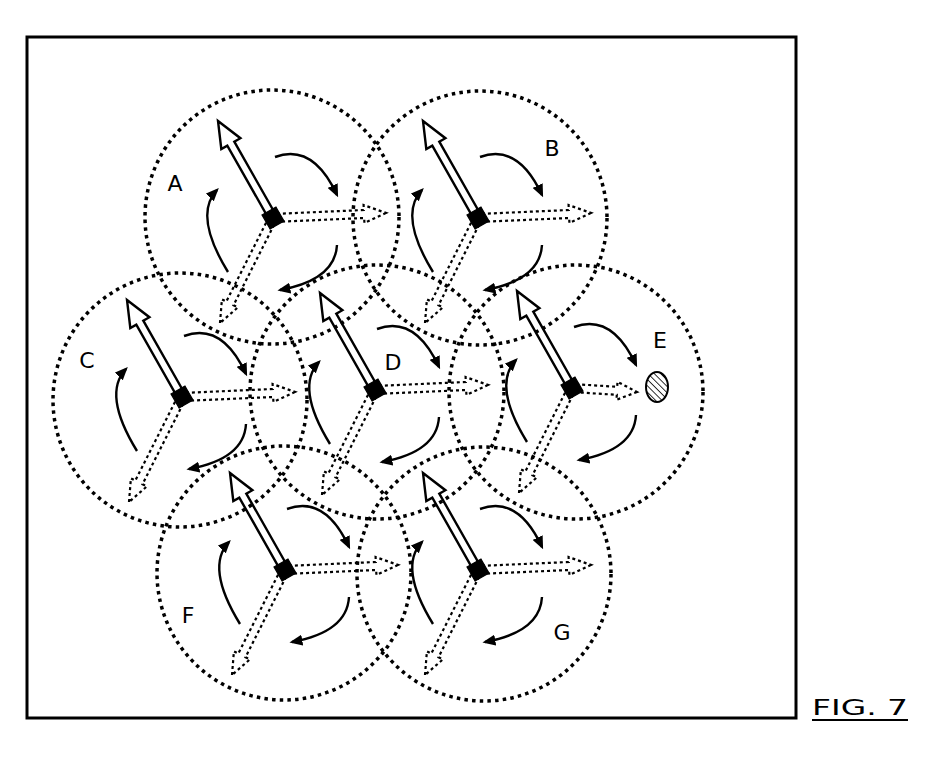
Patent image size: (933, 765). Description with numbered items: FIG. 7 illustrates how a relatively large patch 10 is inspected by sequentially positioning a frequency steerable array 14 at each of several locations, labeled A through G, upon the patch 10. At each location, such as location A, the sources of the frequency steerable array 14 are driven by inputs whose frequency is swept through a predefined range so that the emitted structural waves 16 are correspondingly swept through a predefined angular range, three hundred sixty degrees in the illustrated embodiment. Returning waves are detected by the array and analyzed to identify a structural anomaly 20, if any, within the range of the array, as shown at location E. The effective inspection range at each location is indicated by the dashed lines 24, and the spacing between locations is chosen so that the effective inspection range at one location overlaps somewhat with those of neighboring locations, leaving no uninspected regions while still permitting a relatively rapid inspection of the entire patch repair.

The patch 10 is at (796, 170).
The frequency steerable array 14 is at (290, 209).
The structural waves 16 is at (241, 152).
The structural anomaly 20 is at (657, 403).
The dashed lines 24 is at (500, 93).